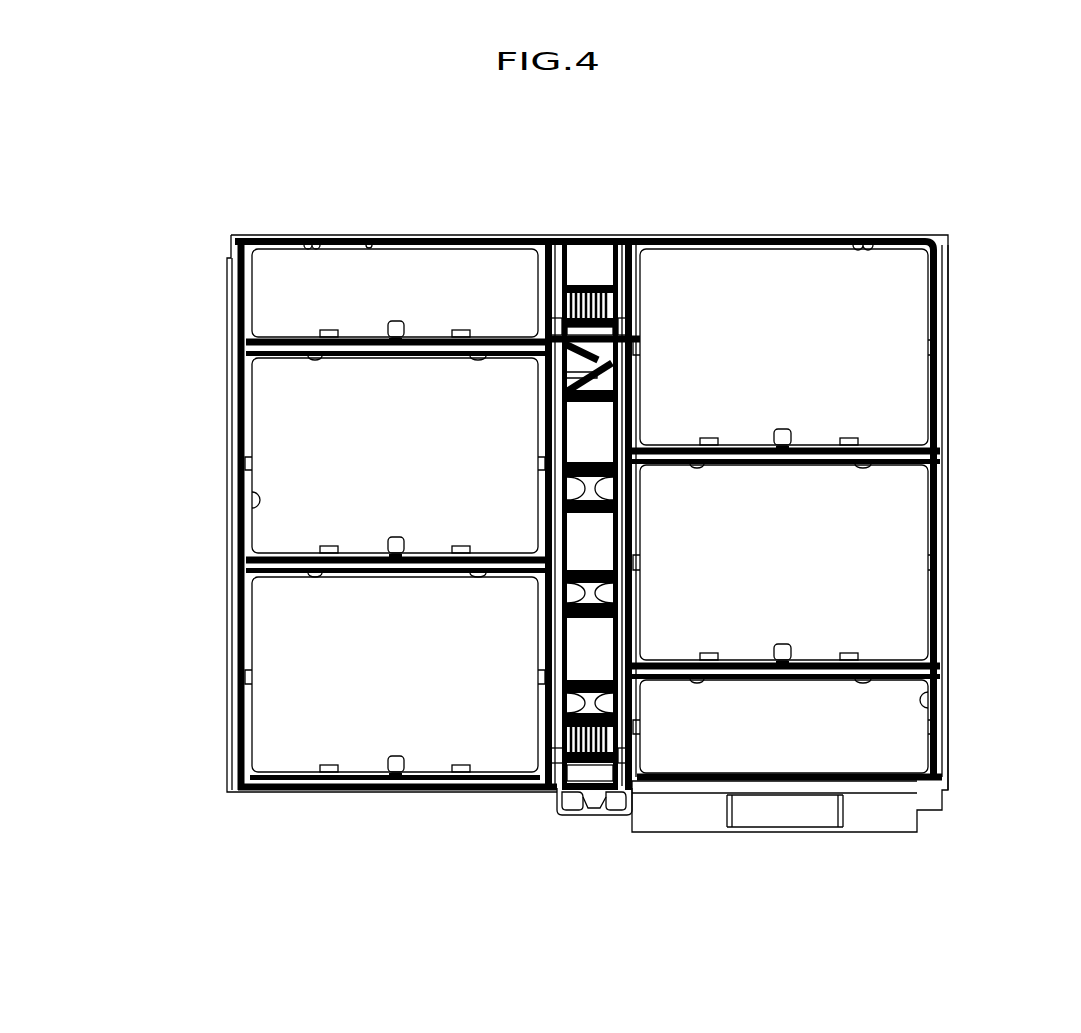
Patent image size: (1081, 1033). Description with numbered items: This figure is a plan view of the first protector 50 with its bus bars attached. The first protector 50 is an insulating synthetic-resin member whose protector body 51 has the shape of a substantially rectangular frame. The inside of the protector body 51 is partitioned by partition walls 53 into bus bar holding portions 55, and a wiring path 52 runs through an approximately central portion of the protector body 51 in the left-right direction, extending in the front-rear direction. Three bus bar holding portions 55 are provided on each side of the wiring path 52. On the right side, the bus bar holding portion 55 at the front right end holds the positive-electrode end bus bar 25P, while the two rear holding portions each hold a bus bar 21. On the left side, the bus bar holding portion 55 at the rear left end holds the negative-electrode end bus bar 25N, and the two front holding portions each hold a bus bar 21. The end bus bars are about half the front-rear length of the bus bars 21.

The first protector 50 is at (752, 206).
The bus bar 21 is at (865, 283).
The protector body 51 is at (952, 305).
The wiring path 52 is at (588, 262).
The partition wall 53 is at (272, 358).
The bus bar holding portion 55 is at (258, 500).
The negative-electrode end bus bar 25N is at (395, 268).
The positive-electrode end bus bar 25P is at (908, 743).